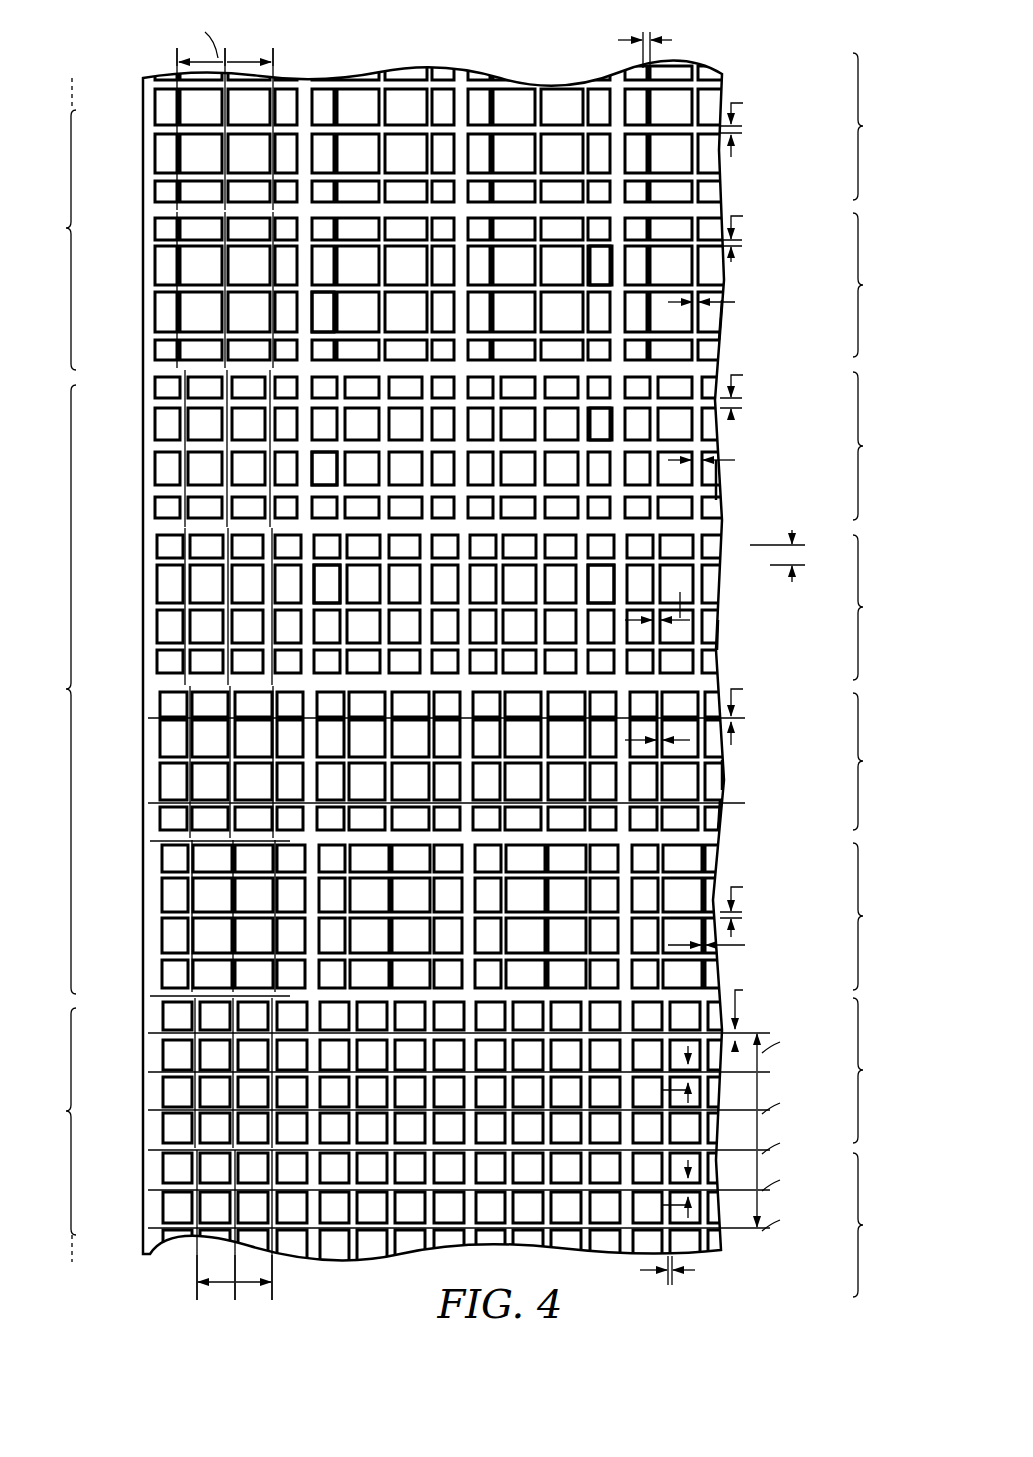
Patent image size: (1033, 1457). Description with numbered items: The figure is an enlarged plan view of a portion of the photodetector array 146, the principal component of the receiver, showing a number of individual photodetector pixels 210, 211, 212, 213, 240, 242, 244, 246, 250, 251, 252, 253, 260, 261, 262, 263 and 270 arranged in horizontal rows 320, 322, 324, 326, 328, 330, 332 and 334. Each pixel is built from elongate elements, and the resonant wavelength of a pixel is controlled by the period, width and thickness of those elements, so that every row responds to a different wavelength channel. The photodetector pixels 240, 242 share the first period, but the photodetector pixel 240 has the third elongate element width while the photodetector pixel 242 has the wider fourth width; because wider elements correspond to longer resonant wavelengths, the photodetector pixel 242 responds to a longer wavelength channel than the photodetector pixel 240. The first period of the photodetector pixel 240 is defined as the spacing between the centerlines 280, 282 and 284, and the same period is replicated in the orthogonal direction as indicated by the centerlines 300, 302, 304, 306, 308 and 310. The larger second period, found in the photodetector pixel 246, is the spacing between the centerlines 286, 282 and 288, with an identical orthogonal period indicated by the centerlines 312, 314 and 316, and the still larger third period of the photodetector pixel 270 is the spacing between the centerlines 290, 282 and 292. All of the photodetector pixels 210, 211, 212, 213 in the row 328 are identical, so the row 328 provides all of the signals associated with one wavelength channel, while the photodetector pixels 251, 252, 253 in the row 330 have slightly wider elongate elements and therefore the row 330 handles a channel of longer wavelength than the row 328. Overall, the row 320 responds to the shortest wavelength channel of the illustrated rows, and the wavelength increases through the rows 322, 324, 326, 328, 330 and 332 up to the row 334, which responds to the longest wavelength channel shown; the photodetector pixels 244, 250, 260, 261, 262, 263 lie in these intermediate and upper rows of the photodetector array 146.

The photodetector array 146 is at (366, 52).
The photodetector pixel 210 is at (144, 598).
The photodetector pixel 211 is at (319, 588).
The photodetector pixel 212 is at (614, 583).
The photodetector pixel 213 is at (727, 633).
The photodetector pixel 240 is at (144, 1218).
The photodetector pixel 242 is at (144, 1100).
The photodetector pixel 244 is at (144, 938).
The photodetector pixel 246 is at (144, 781).
The photodetector pixel 250 is at (144, 436).
The photodetector pixel 251 is at (319, 470).
The photodetector pixel 252 is at (614, 425).
The photodetector pixel 253 is at (727, 475).
The photodetector pixel 260 is at (144, 281).
The photodetector pixel 261 is at (319, 312).
The photodetector pixel 262 is at (614, 268).
The photodetector pixel 263 is at (727, 318).
The photodetector pixel 270 is at (144, 118).
The centerline 280 is at (196, 1272).
The centerline 282 is at (227, 55).
The centerline 284 is at (274, 1290).
The centerline 286 is at (290, 997).
The centerline 288 is at (285, 841).
The centerline 290 is at (176, 53).
The centerline 292 is at (276, 54).
The centerline 300 is at (770, 1230).
The centerline 302 is at (766, 1210).
The centerline 304 is at (766, 1170).
The centerline 306 is at (766, 1130).
The centerline 308 is at (766, 1092).
The centerline 310 is at (768, 1032).
The centerline 312 is at (726, 808).
The centerline 314 is at (730, 778).
The centerline 316 is at (730, 740).
The row 320 is at (494, 1225).
The row 322 is at (494, 1073).
The row 324 is at (494, 916).
The row 326 is at (494, 762).
The row 328 is at (492, 606).
The row 330 is at (492, 448).
The row 332 is at (492, 290).
The row 334 is at (492, 129).